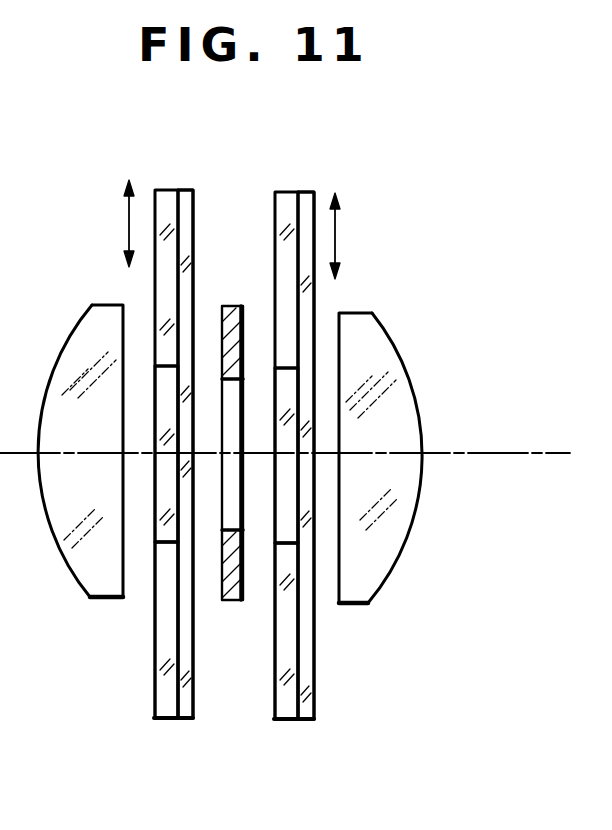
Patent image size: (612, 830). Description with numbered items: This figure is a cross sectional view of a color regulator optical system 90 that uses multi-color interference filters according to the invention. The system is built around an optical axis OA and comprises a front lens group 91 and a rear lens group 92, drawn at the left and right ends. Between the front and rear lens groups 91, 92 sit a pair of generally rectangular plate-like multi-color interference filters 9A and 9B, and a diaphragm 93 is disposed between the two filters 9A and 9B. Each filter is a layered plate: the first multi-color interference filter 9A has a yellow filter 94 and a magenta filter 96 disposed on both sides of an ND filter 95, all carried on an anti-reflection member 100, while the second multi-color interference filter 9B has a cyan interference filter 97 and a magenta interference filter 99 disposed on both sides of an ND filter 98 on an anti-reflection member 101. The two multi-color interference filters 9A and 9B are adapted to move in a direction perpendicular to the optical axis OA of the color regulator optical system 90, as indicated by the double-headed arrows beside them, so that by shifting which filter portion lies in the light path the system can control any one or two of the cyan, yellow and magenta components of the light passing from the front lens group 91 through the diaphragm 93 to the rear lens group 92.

The color regulator optical system 90 is at (380, 212).
The front lens group 91 is at (92, 599).
The rear lens group 92 is at (368, 605).
The diaphragm 93 is at (232, 304).
The yellow filter 94 is at (156, 676).
The ND filter 95 is at (160, 521).
The magenta filter 96 is at (160, 287).
The cyan interference filter 97 is at (278, 676).
The ND filter 98 is at (278, 526).
The magenta interference filter 99 is at (283, 212).
The anti-reflection member 100 is at (184, 720).
The anti-reflection member 101 is at (304, 721).
The multi-color interference filter 9A is at (156, 728).
The multi-color interference filter 9B is at (283, 730).
The optical axis OA is at (531, 456).